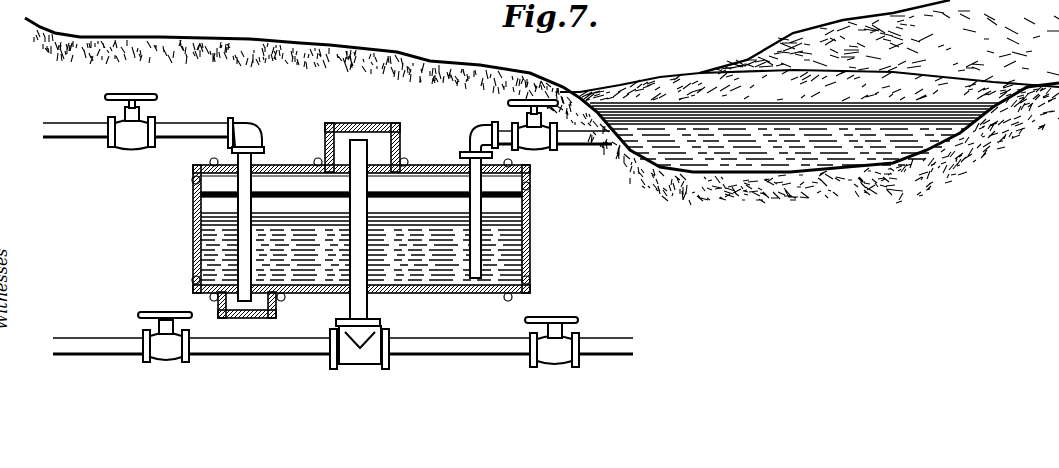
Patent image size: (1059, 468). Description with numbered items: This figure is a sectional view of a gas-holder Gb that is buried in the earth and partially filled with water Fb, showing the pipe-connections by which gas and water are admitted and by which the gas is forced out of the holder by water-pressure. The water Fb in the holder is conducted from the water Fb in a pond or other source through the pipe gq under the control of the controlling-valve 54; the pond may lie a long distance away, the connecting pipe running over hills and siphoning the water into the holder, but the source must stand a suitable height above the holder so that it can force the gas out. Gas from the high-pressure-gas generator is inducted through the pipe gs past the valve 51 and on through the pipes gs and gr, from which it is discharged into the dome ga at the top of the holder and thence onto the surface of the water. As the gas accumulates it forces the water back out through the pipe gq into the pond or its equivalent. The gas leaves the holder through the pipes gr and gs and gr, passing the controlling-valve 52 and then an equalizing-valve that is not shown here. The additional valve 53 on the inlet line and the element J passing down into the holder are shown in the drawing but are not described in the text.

The valve 51 is at (165, 323).
The controlling-valve 52 is at (552, 328).
The valve in inlet pipe 53 is at (131, 110).
The controlling-valve 54 is at (513, 120).
The pipe gr is at (338, 256).
The pipe gs is at (390, 210).
The pipe gq is at (487, 200).
The dome ga is at (362, 131).
The gas-holder Gb is at (340, 229).
The inlet pipe with trap J is at (247, 218).
The water Fb is at (600, 191).